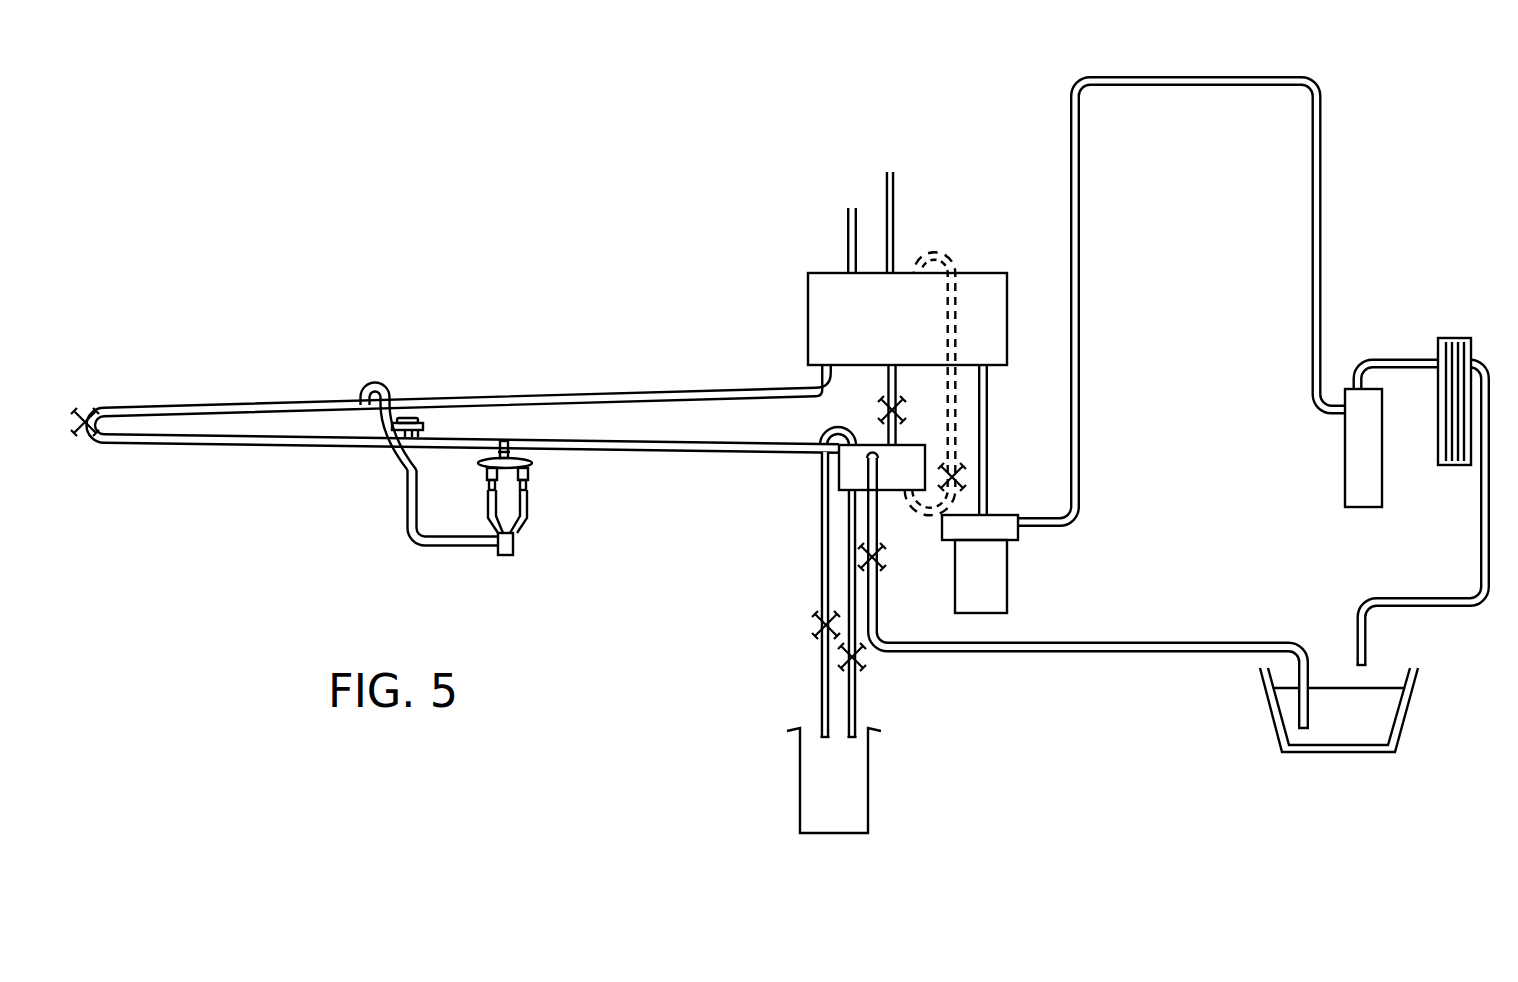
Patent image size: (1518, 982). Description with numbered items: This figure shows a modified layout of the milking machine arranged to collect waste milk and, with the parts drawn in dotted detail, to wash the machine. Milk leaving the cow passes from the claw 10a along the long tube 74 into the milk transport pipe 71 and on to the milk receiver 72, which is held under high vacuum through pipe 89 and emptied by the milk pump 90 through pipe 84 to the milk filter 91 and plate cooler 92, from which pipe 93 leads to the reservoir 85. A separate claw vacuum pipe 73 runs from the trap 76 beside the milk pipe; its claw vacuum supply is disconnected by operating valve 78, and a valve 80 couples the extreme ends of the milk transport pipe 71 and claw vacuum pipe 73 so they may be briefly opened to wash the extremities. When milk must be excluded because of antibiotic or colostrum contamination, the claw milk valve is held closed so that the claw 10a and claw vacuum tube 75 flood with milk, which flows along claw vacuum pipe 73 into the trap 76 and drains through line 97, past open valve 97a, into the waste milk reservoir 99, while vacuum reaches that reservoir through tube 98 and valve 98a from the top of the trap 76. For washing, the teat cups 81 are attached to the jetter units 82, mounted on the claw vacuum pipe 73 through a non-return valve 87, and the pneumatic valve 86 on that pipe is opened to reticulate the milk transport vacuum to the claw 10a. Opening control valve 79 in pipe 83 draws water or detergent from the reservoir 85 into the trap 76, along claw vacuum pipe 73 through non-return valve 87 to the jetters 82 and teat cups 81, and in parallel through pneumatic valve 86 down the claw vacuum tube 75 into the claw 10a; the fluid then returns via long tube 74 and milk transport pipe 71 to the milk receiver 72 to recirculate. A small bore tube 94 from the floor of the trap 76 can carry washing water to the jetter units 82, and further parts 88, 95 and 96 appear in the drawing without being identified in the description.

The claw 10a is at (512, 555).
The milk transport pipe 71 is at (628, 387).
The milk receiver 72 is at (880, 344).
The claw vacuum pipe 73 is at (711, 452).
The long tube 74 is at (392, 455).
The claw vacuum tube 75 is at (405, 505).
The trap 76 is at (838, 478).
The valve 78 is at (882, 408).
The control valve 79 is at (885, 555).
The valve 80 is at (92, 410).
The teat cups 81 is at (490, 495).
The jetter units 82 is at (532, 463).
The pipe 83 is at (1089, 652).
The pipe 84 is at (1322, 197).
The reservoir 85 is at (1383, 718).
The pneumatic valve 86 is at (410, 420).
The non-return valve 87 is at (505, 448).
The nozzle 88 is at (487, 474).
The pipe 89 is at (848, 236).
The milk pump 90 is at (997, 575).
The milk filter 91 is at (1343, 467).
The plate cooler 92 is at (1452, 340).
The pipe 93 is at (1413, 600).
The small bore tube 94 is at (960, 402).
The alternate pipe 95 is at (912, 287).
The valve 96 is at (966, 476).
The line 97 is at (858, 693).
The valve 97a is at (842, 662).
The tube 98 is at (821, 530).
The valve 98a is at (818, 630).
The waste milk reservoir 99 is at (856, 783).